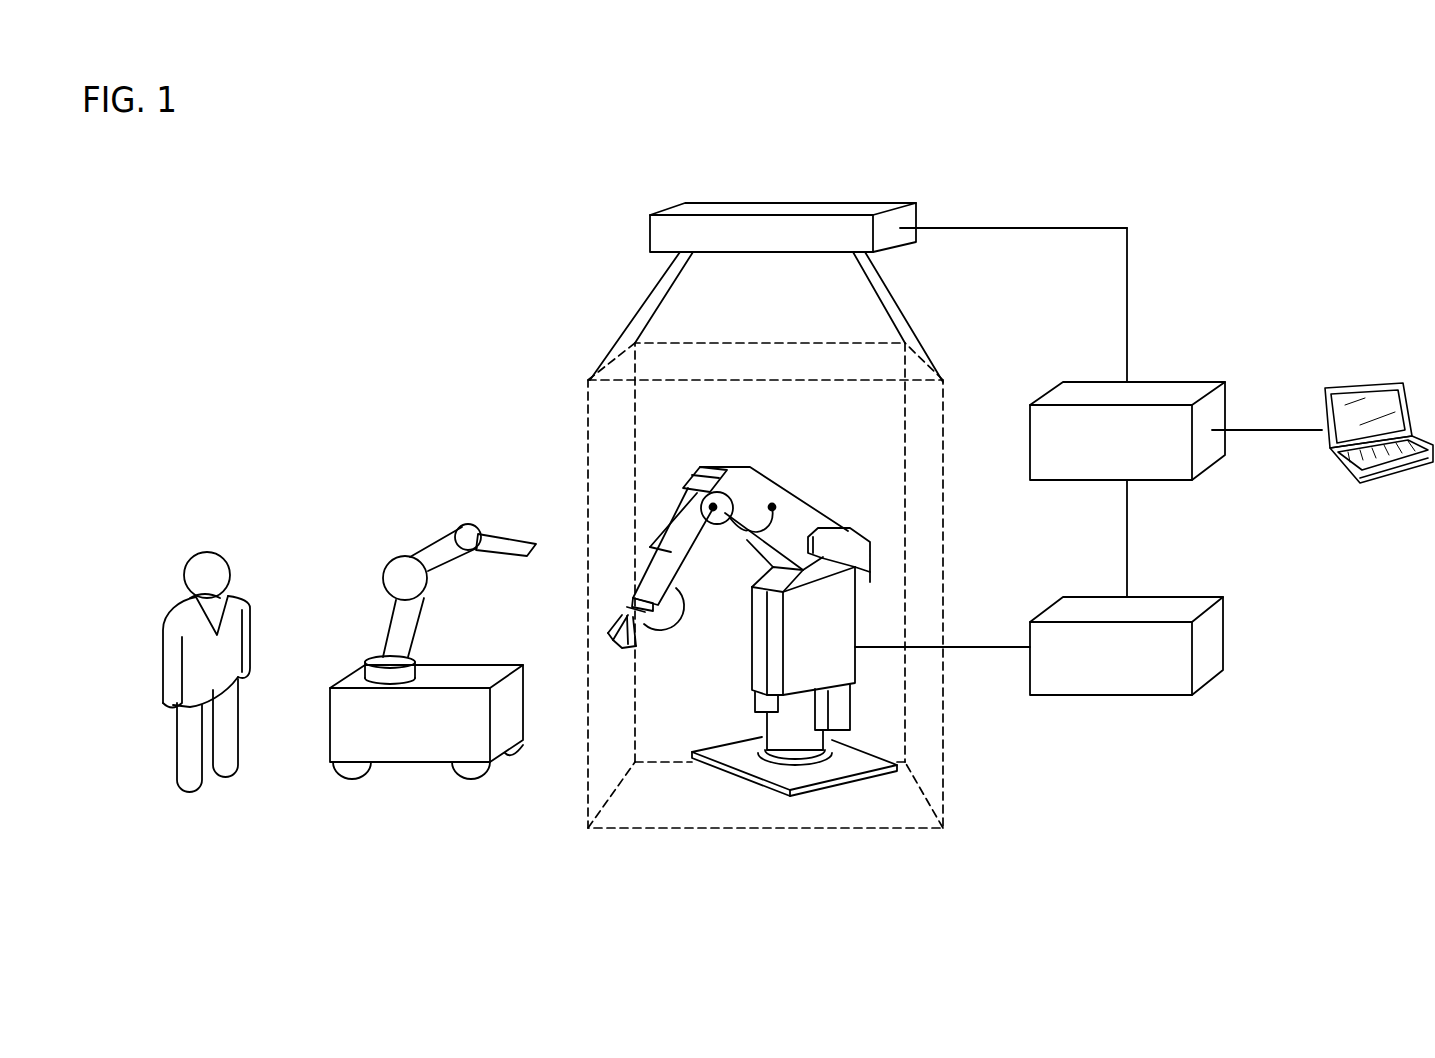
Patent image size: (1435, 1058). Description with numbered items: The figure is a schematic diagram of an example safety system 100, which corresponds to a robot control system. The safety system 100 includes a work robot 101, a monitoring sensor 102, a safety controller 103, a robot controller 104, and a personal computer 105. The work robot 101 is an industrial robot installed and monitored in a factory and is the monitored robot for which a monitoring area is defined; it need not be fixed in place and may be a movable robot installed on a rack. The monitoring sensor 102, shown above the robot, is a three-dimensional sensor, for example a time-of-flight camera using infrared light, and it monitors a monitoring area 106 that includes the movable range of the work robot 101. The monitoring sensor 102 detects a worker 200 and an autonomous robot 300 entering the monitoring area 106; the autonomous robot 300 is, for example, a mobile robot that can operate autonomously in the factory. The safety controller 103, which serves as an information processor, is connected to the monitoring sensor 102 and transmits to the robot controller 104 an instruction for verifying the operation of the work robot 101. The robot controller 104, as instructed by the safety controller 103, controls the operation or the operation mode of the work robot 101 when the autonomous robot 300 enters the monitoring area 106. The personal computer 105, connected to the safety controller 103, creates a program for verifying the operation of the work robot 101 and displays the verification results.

The safety system 100 is at (1247, 148).
The work robot 101 is at (762, 785).
The monitoring sensor 102 is at (838, 202).
The safety controller 103 is at (1175, 380).
The robot controller 104 is at (1188, 597).
The personal computer 105 is at (1375, 488).
The monitoring area 106 is at (943, 772).
The worker 200 is at (200, 550).
The autonomous robot 300 is at (483, 523).